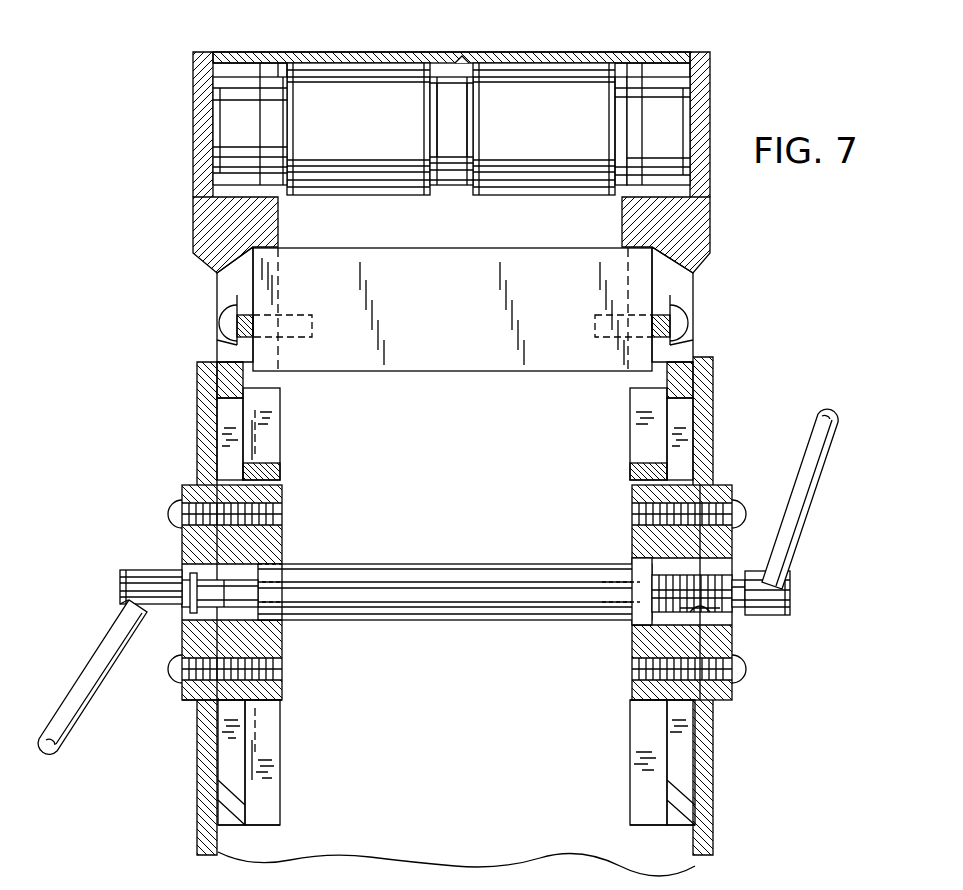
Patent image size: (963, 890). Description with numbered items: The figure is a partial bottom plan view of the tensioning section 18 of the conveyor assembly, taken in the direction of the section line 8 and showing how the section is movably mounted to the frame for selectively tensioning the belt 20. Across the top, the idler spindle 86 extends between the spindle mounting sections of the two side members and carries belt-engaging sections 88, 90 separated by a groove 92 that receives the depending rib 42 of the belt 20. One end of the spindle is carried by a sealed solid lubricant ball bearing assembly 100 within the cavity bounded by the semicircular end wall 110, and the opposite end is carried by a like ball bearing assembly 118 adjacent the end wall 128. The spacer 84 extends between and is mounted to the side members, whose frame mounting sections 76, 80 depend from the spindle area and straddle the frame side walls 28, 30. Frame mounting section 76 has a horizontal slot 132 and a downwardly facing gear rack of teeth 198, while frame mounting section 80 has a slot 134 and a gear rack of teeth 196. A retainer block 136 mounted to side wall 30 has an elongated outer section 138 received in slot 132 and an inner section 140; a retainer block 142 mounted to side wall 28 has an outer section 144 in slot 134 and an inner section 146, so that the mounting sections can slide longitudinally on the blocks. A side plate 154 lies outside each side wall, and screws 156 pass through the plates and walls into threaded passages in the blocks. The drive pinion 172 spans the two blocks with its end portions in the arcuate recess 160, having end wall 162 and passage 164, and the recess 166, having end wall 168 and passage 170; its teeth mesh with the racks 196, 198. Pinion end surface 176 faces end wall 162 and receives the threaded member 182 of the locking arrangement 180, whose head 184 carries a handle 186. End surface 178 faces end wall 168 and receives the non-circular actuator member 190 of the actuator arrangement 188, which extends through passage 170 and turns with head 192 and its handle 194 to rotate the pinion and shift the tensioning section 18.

The axis line 8 is at (247, 432).
The tensioning section 18 is at (728, 196).
The belt 20 is at (546, 49).
The side wall 28 is at (198, 808).
The side wall 30 is at (713, 818).
The rib 42 is at (463, 58).
The frame mounting section 76 is at (610, 780).
The frame mounting section 80 is at (293, 796).
The spacer 84 is at (428, 372).
The idler spindle 86 is at (432, 202).
The belt-engaging section 88 is at (348, 162).
The belt-engaging section 90 is at (580, 170).
The groove 92 is at (455, 193).
The ball bearing assembly 100 is at (210, 134).
The end wall 110 is at (255, 68).
The ball bearing assembly 118 is at (698, 119).
The end wall 128 is at (665, 68).
The slot 132 is at (683, 750).
The slot 134 is at (230, 458).
The retainer block 136 is at (681, 706).
The outer section 138 is at (655, 730).
The inner section 140 is at (648, 712).
The retainer block 142 is at (283, 692).
The outer section 144 is at (240, 710).
The inner section 146 is at (280, 702).
The side plate 154 is at (185, 487).
The screws 156 is at (173, 512).
The recess 160 is at (636, 570).
The end wall 162 is at (636, 622).
The passage 164 is at (702, 612).
The recess 166 is at (262, 565).
The end wall 168 is at (270, 620).
The passage 170 is at (226, 582).
The drive pinion 172 is at (514, 550).
The end surface 176 is at (683, 576).
The end surface 178 is at (240, 613).
The drive pinion locking arrangement 180 is at (791, 580).
The threaded member 182 is at (697, 590).
The head 184 is at (790, 612).
The handle 186 is at (803, 525).
The pinion actuator arrangement 188 is at (86, 596).
The actuator member 190 is at (232, 598).
The head 192 is at (128, 572).
The handle 194 is at (82, 705).
The gear teeth 196 is at (268, 475).
The teeth 198 is at (640, 468).